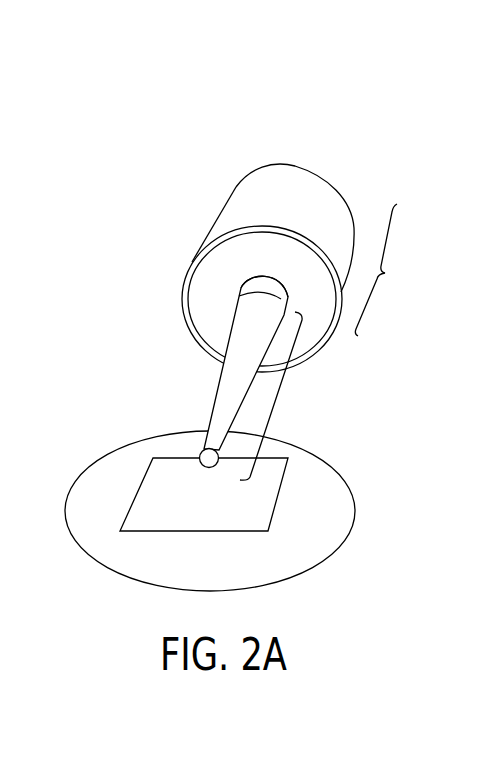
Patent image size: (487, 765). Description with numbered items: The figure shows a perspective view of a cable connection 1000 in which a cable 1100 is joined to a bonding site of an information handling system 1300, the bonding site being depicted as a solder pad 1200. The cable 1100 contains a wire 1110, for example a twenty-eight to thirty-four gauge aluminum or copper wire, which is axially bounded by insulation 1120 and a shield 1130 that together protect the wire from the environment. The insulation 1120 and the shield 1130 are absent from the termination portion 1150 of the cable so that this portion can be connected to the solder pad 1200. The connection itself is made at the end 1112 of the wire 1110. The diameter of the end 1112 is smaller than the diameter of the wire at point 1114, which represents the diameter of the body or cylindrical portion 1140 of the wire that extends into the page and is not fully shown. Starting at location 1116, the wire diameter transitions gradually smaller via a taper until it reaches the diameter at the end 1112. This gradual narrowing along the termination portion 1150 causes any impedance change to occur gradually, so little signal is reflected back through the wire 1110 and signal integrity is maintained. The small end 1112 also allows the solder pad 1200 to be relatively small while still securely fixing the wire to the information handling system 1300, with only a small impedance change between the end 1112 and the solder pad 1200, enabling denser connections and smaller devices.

The cable connection 1000 is at (362, 153).
The cable 1100 is at (244, 263).
The shield 1130 is at (242, 183).
The point 1114 is at (245, 282).
The insulation 1120 is at (208, 282).
The location 1116 is at (242, 293).
The wire 1110 is at (185, 345).
The end 1112 is at (200, 455).
The termination portion 1150 is at (278, 392).
The cylindrical portion 1140 is at (390, 270).
The solder pad 1200 is at (148, 489).
The information handling system 1300 is at (355, 515).